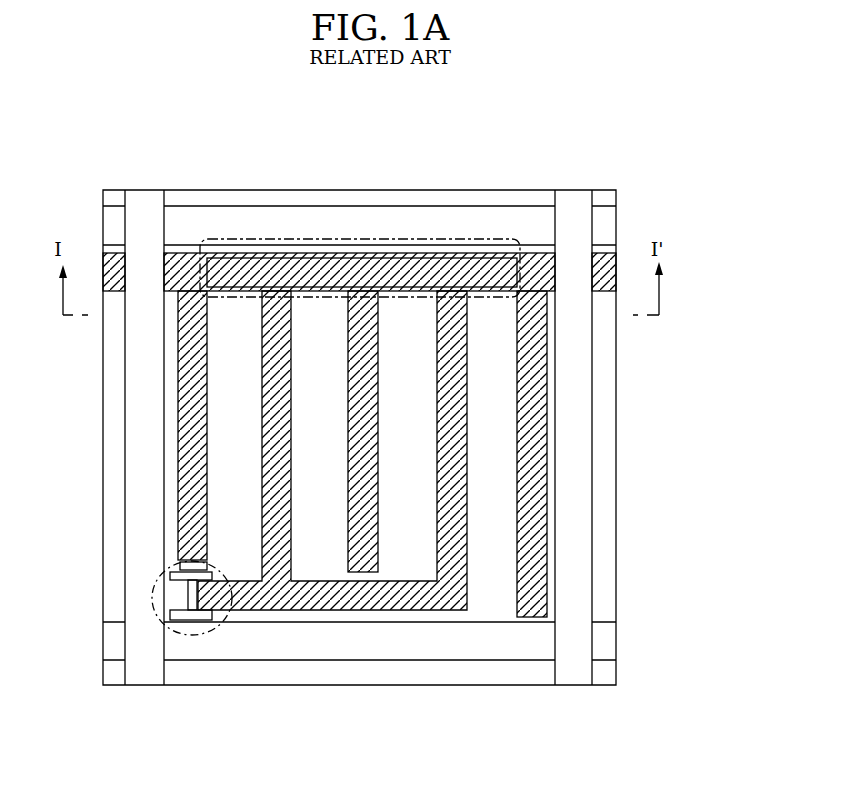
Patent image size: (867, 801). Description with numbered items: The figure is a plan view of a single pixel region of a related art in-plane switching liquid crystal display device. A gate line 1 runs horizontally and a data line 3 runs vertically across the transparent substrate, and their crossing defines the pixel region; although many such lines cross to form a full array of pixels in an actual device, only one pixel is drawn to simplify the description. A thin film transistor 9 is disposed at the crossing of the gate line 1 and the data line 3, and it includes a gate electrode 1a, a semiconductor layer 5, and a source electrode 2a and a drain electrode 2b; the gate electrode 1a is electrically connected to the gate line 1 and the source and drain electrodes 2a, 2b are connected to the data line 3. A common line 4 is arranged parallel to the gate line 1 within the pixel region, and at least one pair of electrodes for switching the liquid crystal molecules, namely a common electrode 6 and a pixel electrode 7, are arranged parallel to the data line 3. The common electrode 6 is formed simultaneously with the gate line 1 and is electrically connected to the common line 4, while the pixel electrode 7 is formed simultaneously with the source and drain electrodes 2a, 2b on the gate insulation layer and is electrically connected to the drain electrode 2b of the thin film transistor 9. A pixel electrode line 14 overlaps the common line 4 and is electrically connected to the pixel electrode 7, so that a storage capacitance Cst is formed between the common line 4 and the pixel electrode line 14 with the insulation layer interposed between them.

The gate line 1 is at (437, 645).
The gate electrode 1a is at (185, 563).
The source electrode 2a is at (168, 583).
The drain electrode 2b is at (214, 622).
The data line 3 is at (143, 670).
The common line 4 is at (117, 245).
The semiconductor layer 5 is at (190, 618).
The common electrode 6 is at (195, 315).
The pixel electrode 7 is at (276, 305).
The thin film transistor 9 is at (152, 622).
The pixel electrode line 14 is at (496, 272).
The storage capacitance Cst is at (410, 238).